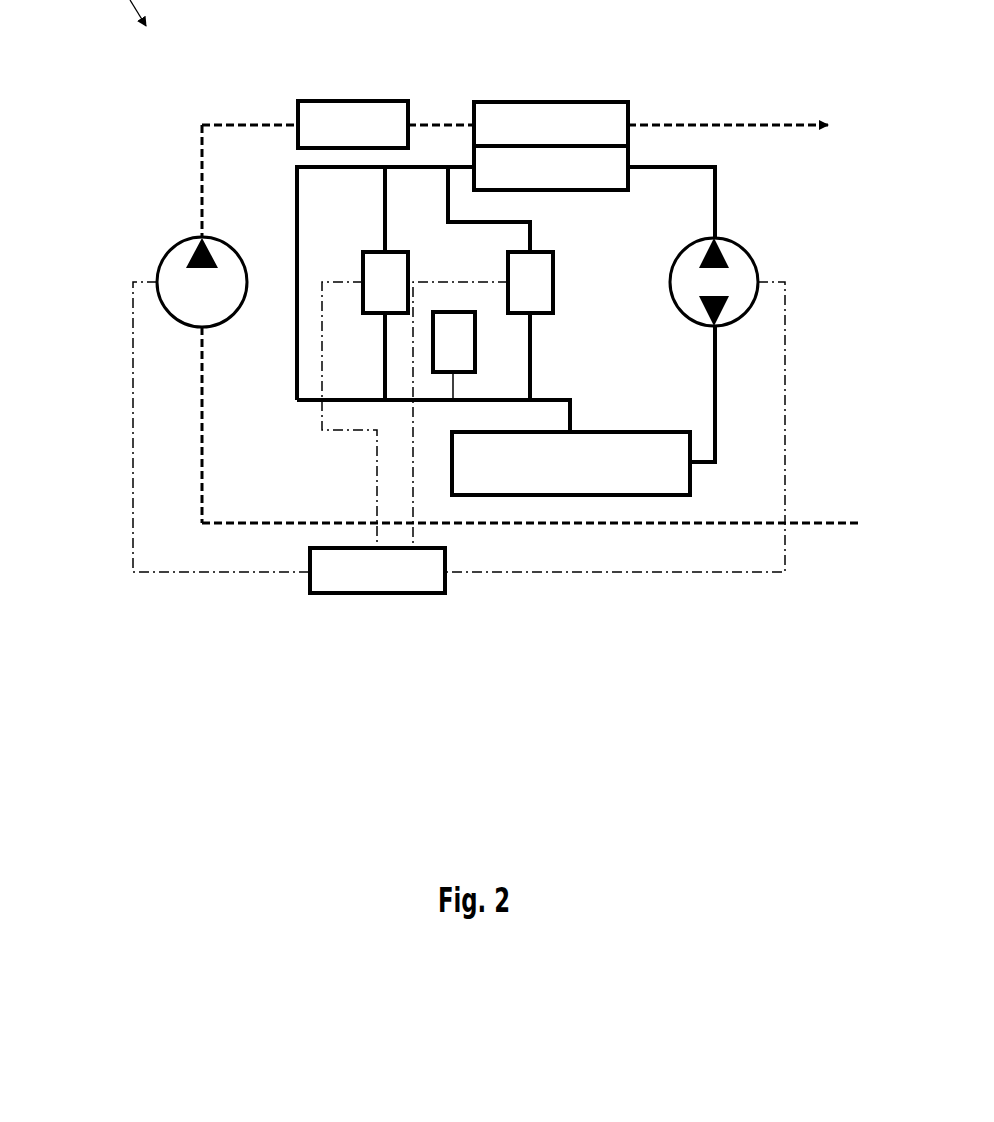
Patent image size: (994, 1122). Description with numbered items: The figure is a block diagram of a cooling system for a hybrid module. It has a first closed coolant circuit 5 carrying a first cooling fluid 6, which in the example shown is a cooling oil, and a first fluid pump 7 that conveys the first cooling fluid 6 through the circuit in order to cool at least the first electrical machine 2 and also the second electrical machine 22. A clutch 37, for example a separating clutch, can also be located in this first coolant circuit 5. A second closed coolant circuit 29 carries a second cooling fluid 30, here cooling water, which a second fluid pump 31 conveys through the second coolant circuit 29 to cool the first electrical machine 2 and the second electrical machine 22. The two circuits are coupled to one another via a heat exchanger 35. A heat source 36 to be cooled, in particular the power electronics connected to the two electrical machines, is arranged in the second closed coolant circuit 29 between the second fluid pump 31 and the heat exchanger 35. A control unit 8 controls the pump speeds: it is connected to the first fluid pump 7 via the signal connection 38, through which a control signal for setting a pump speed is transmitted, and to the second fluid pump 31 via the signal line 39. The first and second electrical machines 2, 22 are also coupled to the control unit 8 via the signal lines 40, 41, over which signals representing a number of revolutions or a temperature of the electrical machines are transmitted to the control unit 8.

The first electrical machine 2 is at (535, 285).
The first closed coolant circuit 5 is at (716, 208).
The first cooling fluid 6 is at (583, 486).
The first fluid pump 7 is at (757, 260).
The control unit 8 is at (375, 575).
The second electrical machine 22 is at (377, 270).
The second closed coolant circuit 29 is at (812, 527).
The second cooling fluid 30 is at (744, 125).
The second fluid pump 31 is at (158, 263).
The heat exchanger 35 is at (549, 96).
The heat source 36 is at (337, 122).
The clutch 37 is at (455, 355).
The signal connection 38 is at (785, 367).
The signal line 39 is at (132, 368).
The signal line 40 is at (377, 515).
The signal line 41 is at (413, 468).